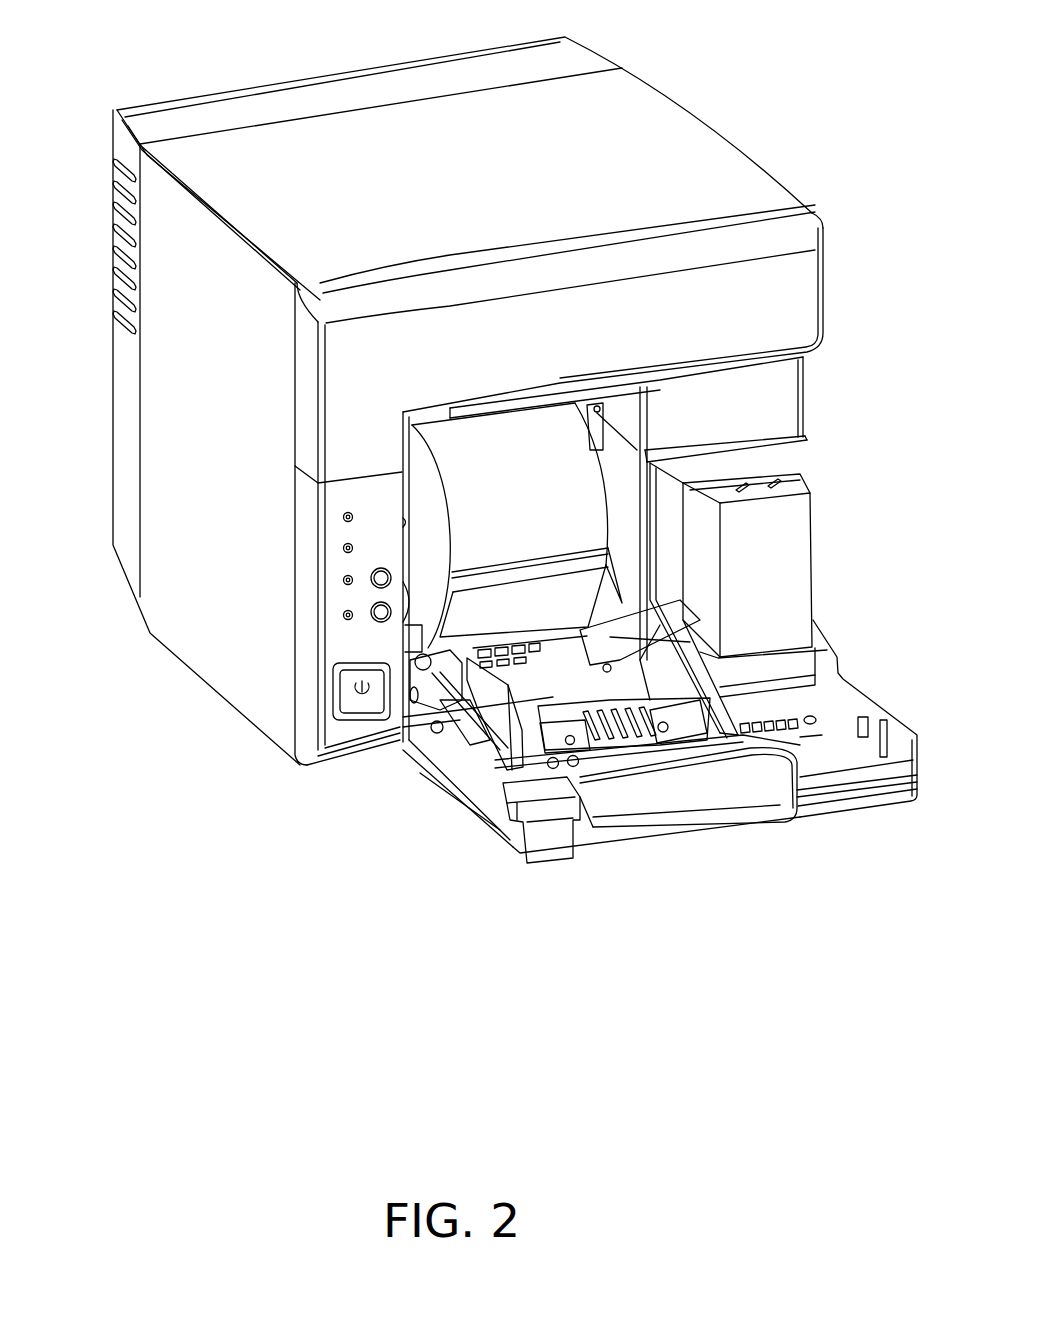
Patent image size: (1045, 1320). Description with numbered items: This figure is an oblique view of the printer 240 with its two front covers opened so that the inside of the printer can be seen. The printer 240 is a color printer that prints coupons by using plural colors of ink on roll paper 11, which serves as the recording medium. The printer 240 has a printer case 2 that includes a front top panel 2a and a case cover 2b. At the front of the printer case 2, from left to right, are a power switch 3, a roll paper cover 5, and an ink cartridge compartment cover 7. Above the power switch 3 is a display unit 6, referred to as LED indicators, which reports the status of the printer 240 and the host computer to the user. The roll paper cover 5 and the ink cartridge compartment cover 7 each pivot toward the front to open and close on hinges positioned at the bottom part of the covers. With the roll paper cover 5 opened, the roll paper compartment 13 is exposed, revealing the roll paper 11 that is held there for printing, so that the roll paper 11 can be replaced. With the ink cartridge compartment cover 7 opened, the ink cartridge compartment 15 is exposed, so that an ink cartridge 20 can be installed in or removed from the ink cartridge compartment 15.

The printer 240 is at (698, 73).
The printer case 2 is at (886, 148).
The front top panel 2a is at (800, 286).
The case cover 2b is at (748, 173).
The roll paper compartment 13 is at (613, 450).
The ink cartridge compartment 15 is at (790, 457).
The ink cartridge 20 is at (775, 573).
The roll paper 11 is at (428, 500).
The display unit 6 is at (334, 503).
The power switch 3 is at (353, 705).
The roll paper cover 5 is at (698, 815).
The ink cartridge compartment cover 7 is at (843, 778).